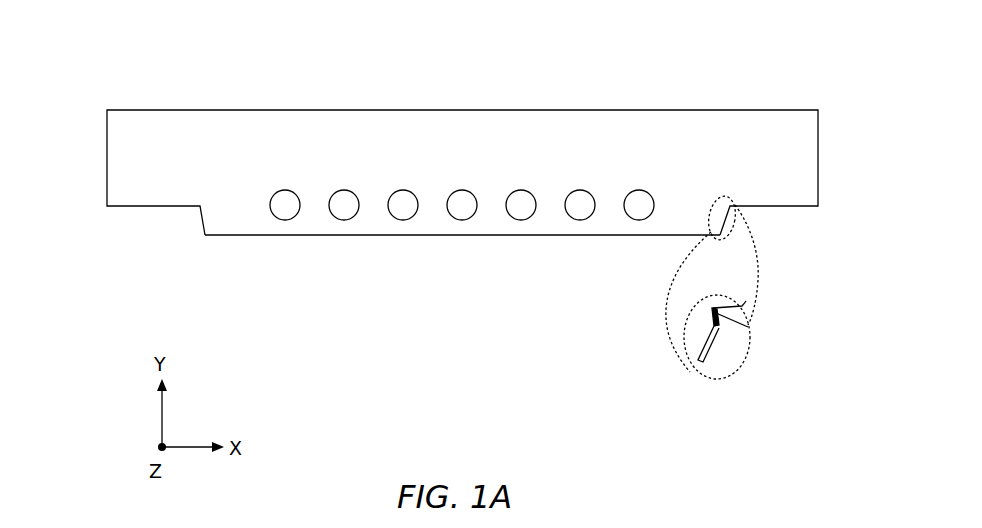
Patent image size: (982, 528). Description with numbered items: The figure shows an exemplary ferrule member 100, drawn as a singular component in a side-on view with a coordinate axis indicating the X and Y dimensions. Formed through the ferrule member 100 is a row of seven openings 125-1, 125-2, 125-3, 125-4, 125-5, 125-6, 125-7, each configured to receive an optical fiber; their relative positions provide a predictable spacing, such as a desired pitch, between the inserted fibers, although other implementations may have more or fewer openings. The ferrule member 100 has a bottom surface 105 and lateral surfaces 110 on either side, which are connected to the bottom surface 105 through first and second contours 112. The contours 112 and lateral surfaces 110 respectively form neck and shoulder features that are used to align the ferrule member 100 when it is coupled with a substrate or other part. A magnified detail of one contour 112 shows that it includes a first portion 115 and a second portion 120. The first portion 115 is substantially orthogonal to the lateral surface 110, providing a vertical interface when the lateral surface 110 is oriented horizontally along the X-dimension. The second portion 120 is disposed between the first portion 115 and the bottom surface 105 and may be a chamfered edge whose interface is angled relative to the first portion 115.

The ferrule member 100 is at (657, 44).
The bottom surface 105 is at (216, 244).
The lateral surface 110 is at (137, 207).
The contour 112 is at (183, 220).
The first portion 115 is at (719, 324).
The second portion 120 is at (717, 348).
The opening 125-1 is at (290, 219).
The opening 125-2 is at (344, 220).
The opening 125-3 is at (408, 219).
The opening 125-4 is at (462, 220).
The opening 125-5 is at (526, 219).
The opening 125-6 is at (580, 220).
The opening 125-7 is at (644, 219).